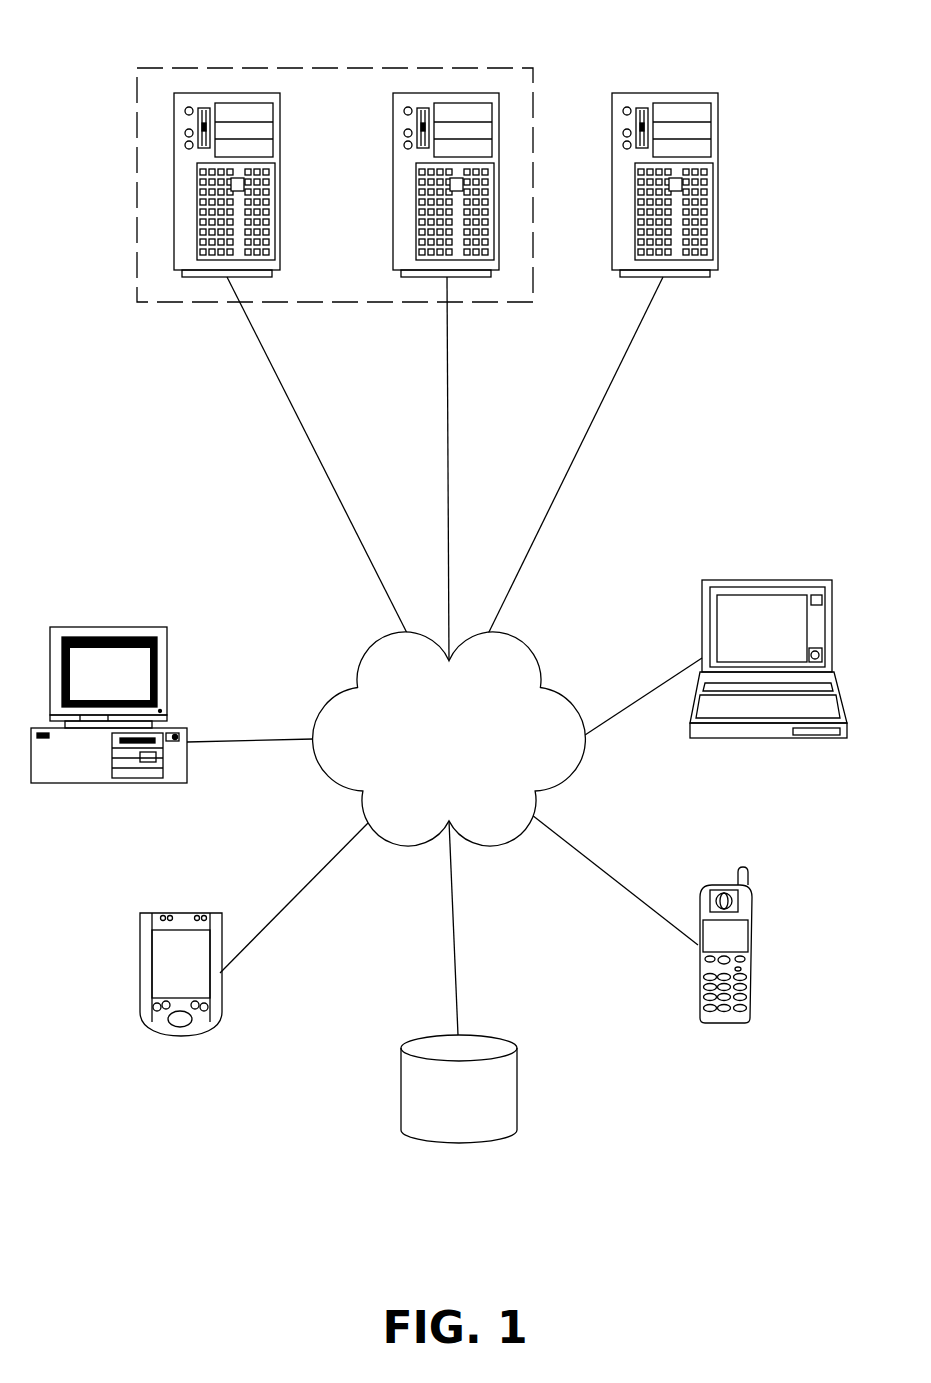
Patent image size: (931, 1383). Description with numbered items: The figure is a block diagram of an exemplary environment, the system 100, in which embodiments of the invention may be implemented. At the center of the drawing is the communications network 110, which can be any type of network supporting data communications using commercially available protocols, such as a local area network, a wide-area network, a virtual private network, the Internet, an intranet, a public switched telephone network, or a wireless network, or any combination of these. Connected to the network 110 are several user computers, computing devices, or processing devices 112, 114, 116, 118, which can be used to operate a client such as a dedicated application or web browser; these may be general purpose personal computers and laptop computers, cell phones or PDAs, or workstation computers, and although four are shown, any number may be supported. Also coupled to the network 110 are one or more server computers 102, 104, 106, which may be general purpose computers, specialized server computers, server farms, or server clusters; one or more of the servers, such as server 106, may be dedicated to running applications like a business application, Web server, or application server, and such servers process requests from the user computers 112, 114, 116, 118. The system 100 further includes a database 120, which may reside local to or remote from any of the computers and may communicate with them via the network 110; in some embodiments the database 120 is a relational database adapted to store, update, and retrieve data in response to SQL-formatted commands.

The system 100 is at (815, 96).
The server computer 102 is at (208, 93).
The server computer 104 is at (445, 93).
The server computer 106 is at (723, 180).
The communications network 110 is at (428, 787).
The user computer 112 is at (105, 627).
The user computer 114 is at (763, 580).
The user computer 116 is at (720, 1027).
The user computer 118 is at (180, 1037).
The database 120 is at (479, 1140).